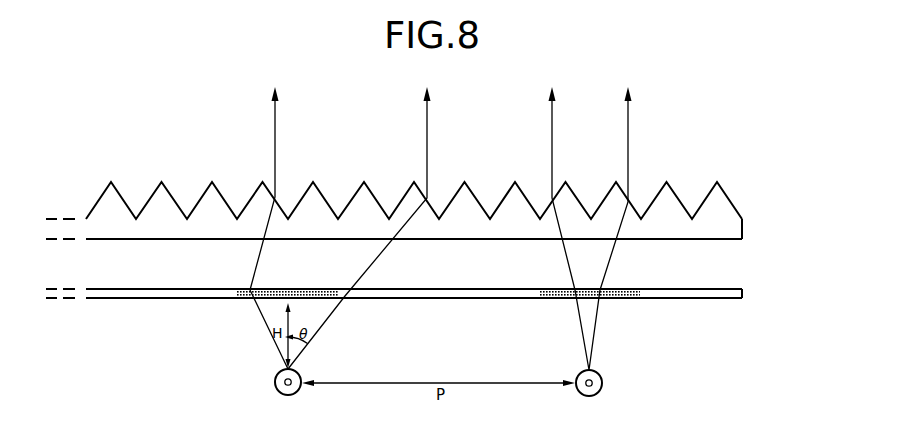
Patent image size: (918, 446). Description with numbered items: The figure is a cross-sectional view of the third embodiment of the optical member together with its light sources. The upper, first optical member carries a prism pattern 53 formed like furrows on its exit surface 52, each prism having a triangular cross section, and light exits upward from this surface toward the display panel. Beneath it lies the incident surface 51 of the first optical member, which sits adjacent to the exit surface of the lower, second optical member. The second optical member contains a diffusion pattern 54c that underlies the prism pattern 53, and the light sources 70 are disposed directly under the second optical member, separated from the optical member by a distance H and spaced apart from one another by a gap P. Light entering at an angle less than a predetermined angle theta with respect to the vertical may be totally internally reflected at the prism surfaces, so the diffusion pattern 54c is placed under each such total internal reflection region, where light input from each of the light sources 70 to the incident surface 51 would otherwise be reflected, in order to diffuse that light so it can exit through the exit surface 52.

The exit surface 52 is at (724, 190).
The prism pattern 53 is at (718, 204).
The incident surface 51 is at (439, 250).
The diffusion pattern 54c is at (627, 298).
The light sources 70 is at (275, 389).